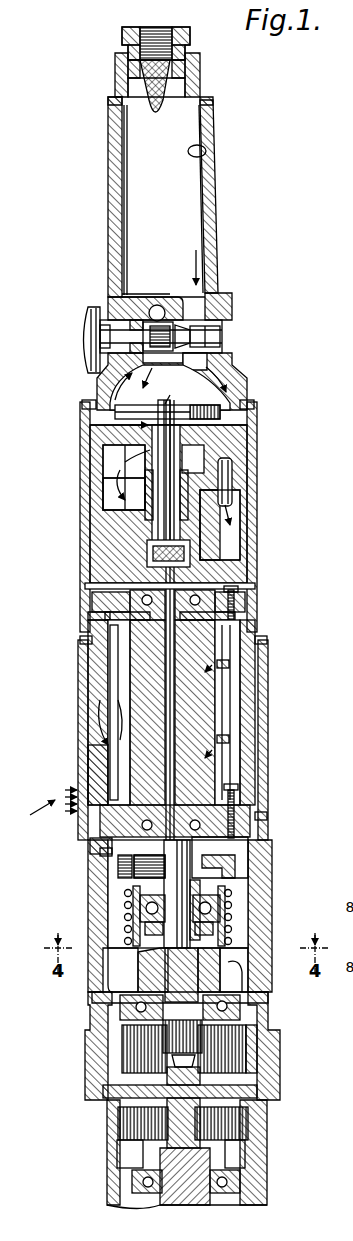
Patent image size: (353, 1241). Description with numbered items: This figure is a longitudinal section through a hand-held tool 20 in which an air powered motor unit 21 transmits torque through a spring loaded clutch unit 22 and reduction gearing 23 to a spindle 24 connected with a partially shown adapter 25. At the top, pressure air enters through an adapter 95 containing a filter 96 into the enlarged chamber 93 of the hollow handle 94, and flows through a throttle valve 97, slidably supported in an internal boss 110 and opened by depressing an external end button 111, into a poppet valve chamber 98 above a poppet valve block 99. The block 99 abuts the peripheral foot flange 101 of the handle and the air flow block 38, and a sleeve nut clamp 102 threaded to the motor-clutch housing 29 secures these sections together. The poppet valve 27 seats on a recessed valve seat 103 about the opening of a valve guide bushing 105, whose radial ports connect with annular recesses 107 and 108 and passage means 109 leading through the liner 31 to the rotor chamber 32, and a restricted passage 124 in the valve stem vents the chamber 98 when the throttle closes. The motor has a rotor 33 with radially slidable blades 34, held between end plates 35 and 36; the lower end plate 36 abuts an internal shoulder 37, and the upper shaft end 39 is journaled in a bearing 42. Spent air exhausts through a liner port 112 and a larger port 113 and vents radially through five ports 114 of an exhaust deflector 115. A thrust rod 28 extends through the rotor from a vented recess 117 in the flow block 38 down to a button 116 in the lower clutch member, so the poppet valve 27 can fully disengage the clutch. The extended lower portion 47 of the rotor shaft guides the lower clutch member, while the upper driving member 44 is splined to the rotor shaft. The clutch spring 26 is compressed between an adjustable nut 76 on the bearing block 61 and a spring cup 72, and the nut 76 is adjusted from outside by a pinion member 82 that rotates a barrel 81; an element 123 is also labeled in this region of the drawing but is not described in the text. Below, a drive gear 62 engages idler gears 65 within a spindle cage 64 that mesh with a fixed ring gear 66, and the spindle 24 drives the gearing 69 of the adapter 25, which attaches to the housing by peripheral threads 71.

The tool 20 is at (90, 105).
The adapter 95 is at (190, 80).
The filter 96 is at (158, 117).
The chamber 93 is at (206, 151).
The handle 94 is at (218, 206).
The internal boss 110 is at (136, 296).
The external end button 111 is at (83, 320).
The throttle valve 97 is at (226, 322).
The poppet valve chamber 98 is at (215, 385).
The restricted passage 124 is at (170, 391).
The peripheral foot flange 101 is at (84, 412).
The sleeve nut clamp 102 is at (84, 426).
The poppet valve 27 is at (222, 413).
The poppet valve block 99 is at (236, 438).
The annular recess 107 is at (103, 458).
The valve guide bushing 105 is at (232, 482).
The annular recess 108 is at (103, 495).
The air flow block 38 is at (100, 527).
The passage means 109 is at (250, 562).
The vented recess 117 is at (100, 571).
The shaft end 39 is at (232, 582).
The bearing 42 is at (215, 598).
The end plate 35 is at (245, 611).
The valve seat 103 is at (90, 619).
The motor unit 21 is at (262, 650).
The exhaust deflector 115 is at (268, 678).
The liner 31 is at (100, 672).
The chamber 32 is at (116, 684).
The thrust rod 28 is at (176, 722).
The blades 34 is at (210, 728).
The liner port 112 is at (98, 745).
The port 113 is at (96, 757).
The rotor 33 is at (222, 768).
The end plate 36 is at (246, 804).
The internal shoulder 37 is at (262, 822).
The ports 114 is at (44, 810).
The motor-clutch housing 29 is at (265, 842).
The pinion member 82 is at (98, 853).
The upper driving member 44 is at (248, 860).
The clutch unit 22 is at (116, 868).
The spring 26 is at (232, 897).
The barrel 81 is at (110, 890).
The spring cup 72 is at (222, 913).
The lower portion of rotor shaft 47 is at (124, 906).
The button 116 is at (236, 938).
The block 123 is at (125, 962).
The adjustable nut 76 is at (250, 966).
The bearing block 61 is at (246, 1002).
The idler gears 65 is at (246, 1040).
The reduction gearing 23 is at (120, 1053).
The peripheral threads 71 is at (98, 1068).
The drive gear 62 is at (182, 1052).
The ring gear 66 is at (248, 1062).
The spindle cage 64 is at (225, 1092).
The gearing 69 is at (130, 1122).
The spindle 24 is at (236, 1122).
The adapter 25 is at (275, 1178).